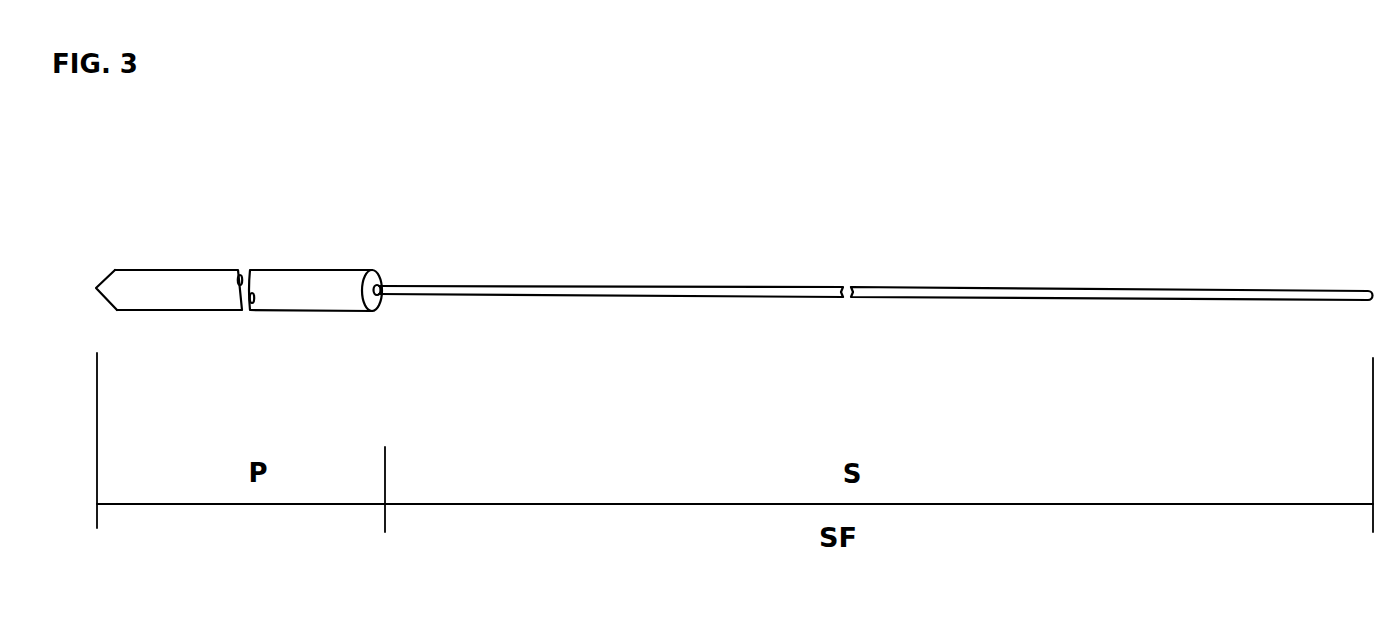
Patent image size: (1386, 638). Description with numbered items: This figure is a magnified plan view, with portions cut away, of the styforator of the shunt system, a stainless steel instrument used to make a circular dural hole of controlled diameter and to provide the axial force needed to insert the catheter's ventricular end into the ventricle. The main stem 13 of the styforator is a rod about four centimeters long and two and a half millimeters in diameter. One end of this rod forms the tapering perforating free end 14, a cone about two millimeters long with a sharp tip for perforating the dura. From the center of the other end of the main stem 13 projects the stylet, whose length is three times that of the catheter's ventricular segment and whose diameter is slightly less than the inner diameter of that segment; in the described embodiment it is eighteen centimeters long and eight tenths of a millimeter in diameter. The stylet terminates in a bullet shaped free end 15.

The main stem of the styforator 13 is at (288, 288).
The tapering perforating free end of the styforator 14 is at (108, 287).
The bullet shaped free end of the stylet portion of the styforator 15 is at (1373, 290).